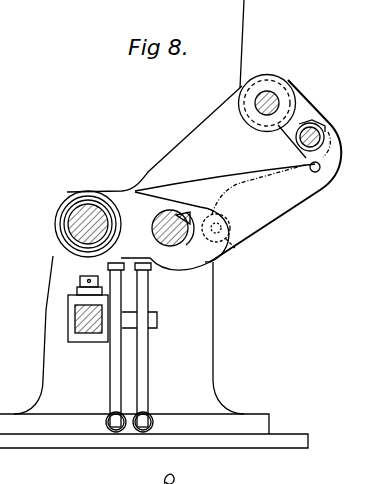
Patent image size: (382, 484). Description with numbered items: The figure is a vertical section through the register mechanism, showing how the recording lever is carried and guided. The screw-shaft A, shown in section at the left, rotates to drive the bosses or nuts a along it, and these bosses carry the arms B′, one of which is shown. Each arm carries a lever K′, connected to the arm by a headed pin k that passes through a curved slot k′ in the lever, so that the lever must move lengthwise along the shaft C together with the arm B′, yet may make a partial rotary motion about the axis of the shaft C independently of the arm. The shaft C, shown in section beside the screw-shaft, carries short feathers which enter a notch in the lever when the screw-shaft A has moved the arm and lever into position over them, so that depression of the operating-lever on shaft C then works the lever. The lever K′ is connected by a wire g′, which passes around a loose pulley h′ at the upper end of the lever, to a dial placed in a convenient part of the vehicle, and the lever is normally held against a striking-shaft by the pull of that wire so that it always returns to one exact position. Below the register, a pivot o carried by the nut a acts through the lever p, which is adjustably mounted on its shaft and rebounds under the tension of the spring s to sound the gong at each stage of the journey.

The boss a is at (152, 143).
The screw-shaft A is at (92, 224).
The arm B' is at (134, 236).
The shaft C is at (168, 228).
The curved slot k' is at (253, 206).
The headed pin k is at (239, 252).
The lever K' is at (238, 171).
The loose pulley h' is at (267, 101).
The wire g' is at (249, 44).
The pivot o is at (126, 338).
The spring s is at (147, 347).
The lever p is at (140, 308).